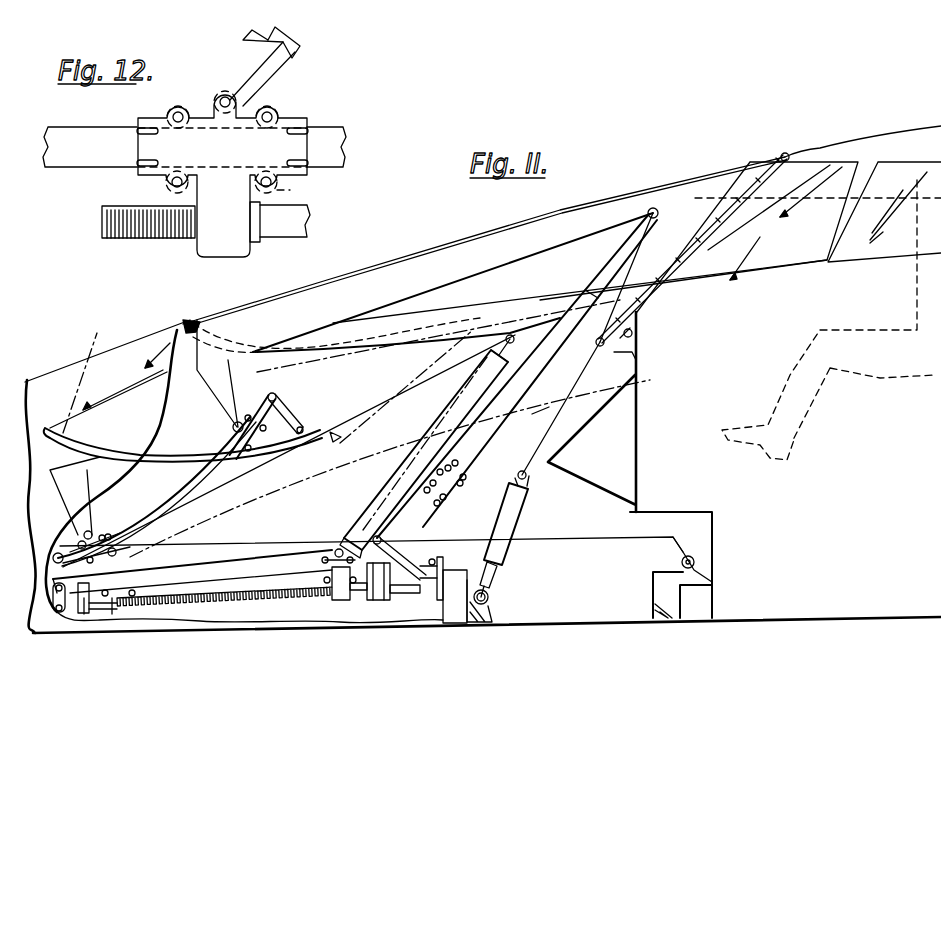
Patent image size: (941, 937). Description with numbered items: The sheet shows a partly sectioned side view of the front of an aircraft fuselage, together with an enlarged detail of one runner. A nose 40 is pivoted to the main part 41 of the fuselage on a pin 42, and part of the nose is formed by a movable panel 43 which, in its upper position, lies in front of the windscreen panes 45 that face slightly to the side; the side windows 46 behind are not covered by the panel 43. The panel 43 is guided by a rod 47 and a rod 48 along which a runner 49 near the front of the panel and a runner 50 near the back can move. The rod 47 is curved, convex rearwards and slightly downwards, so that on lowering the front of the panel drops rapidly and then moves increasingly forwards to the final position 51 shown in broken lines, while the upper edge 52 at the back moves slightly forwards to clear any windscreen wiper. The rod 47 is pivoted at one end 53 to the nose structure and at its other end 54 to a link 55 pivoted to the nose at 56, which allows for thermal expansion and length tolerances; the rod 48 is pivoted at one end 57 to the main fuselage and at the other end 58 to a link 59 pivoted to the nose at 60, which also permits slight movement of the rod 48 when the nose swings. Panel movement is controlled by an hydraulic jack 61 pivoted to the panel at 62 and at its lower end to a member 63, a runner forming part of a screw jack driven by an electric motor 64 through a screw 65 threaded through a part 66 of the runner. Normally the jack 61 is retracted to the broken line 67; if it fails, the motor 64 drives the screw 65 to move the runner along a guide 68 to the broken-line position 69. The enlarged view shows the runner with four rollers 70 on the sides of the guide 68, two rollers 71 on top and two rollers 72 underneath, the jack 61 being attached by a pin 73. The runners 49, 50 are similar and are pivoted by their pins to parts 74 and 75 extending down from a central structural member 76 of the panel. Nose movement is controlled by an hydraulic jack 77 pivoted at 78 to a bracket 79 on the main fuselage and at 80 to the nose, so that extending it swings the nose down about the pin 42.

In FIG. 11, the nose 40 is at (537, 627).
In FIG. 11, the main part of the fuselage 41 is at (757, 620).
In FIG. 11, the pin 42 is at (694, 560).
In FIG. 11, the movable panel 43 is at (407, 259).
In FIG. 11, the panes 45 is at (817, 167).
In FIG. 11, the side windows 46 is at (893, 170).
In FIG. 11, the rod 47 is at (162, 510).
In FIG. 11, the rod 48 is at (536, 412).
In FIG. 11, the runner 49 is at (239, 420).
In FIG. 11, the runner 50 is at (620, 362).
In FIG. 11, the final position 51 is at (95, 360).
In FIG. 11, the upper edge 52 is at (787, 154).
In FIG. 11, the end 53 is at (80, 533).
In FIG. 11, the end 54 is at (276, 397).
In FIG. 11, the link 55 is at (294, 414).
In FIG. 11, the pivot 56 is at (334, 435).
In FIG. 11, the end 57 is at (637, 332).
In FIG. 11, the end 58 is at (400, 531).
In FIG. 11, the link 59 is at (397, 557).
In FIG. 11, the pivot 60 is at (428, 595).
In FIG. 11, the hydraulic jack 61 is at (518, 370).
In FIG. 11, the pivot 62 is at (653, 208).
In FIG. 11, the member 63 is at (337, 549).
In FIG. 11, the electric motor 64 is at (387, 602).
In FIG. 12, the screw 65 is at (124, 206).
In FIG. 11, the screw 65 is at (263, 600).
In FIG. 12, the part 66 is at (227, 248).
In FIG. 11, the part 66 is at (343, 602).
In FIG. 11, the broken line 67 is at (402, 453).
In FIG. 12, the guide 68 is at (67, 143).
In FIG. 11, the guide 68 is at (213, 578).
In FIG. 11, the position 69 is at (120, 614).
In FIG. 12, the rollers 70 is at (137, 131).
In FIG. 12, the rollers 71 is at (171, 108).
In FIG. 12, the rollers 72 is at (165, 188).
In FIG. 12, the pin 73 is at (222, 92).
In FIG. 11, the part 74 is at (217, 395).
In FIG. 11, the part 75 is at (596, 342).
In FIG. 11, the central structural member 76 is at (348, 278).
In FIG. 11, the hydraulic jack 77 is at (514, 520).
In FIG. 11, the pivot 78 is at (517, 474).
In FIG. 11, the bracket 79 is at (576, 478).
In FIG. 11, the pivot 80 is at (489, 593).